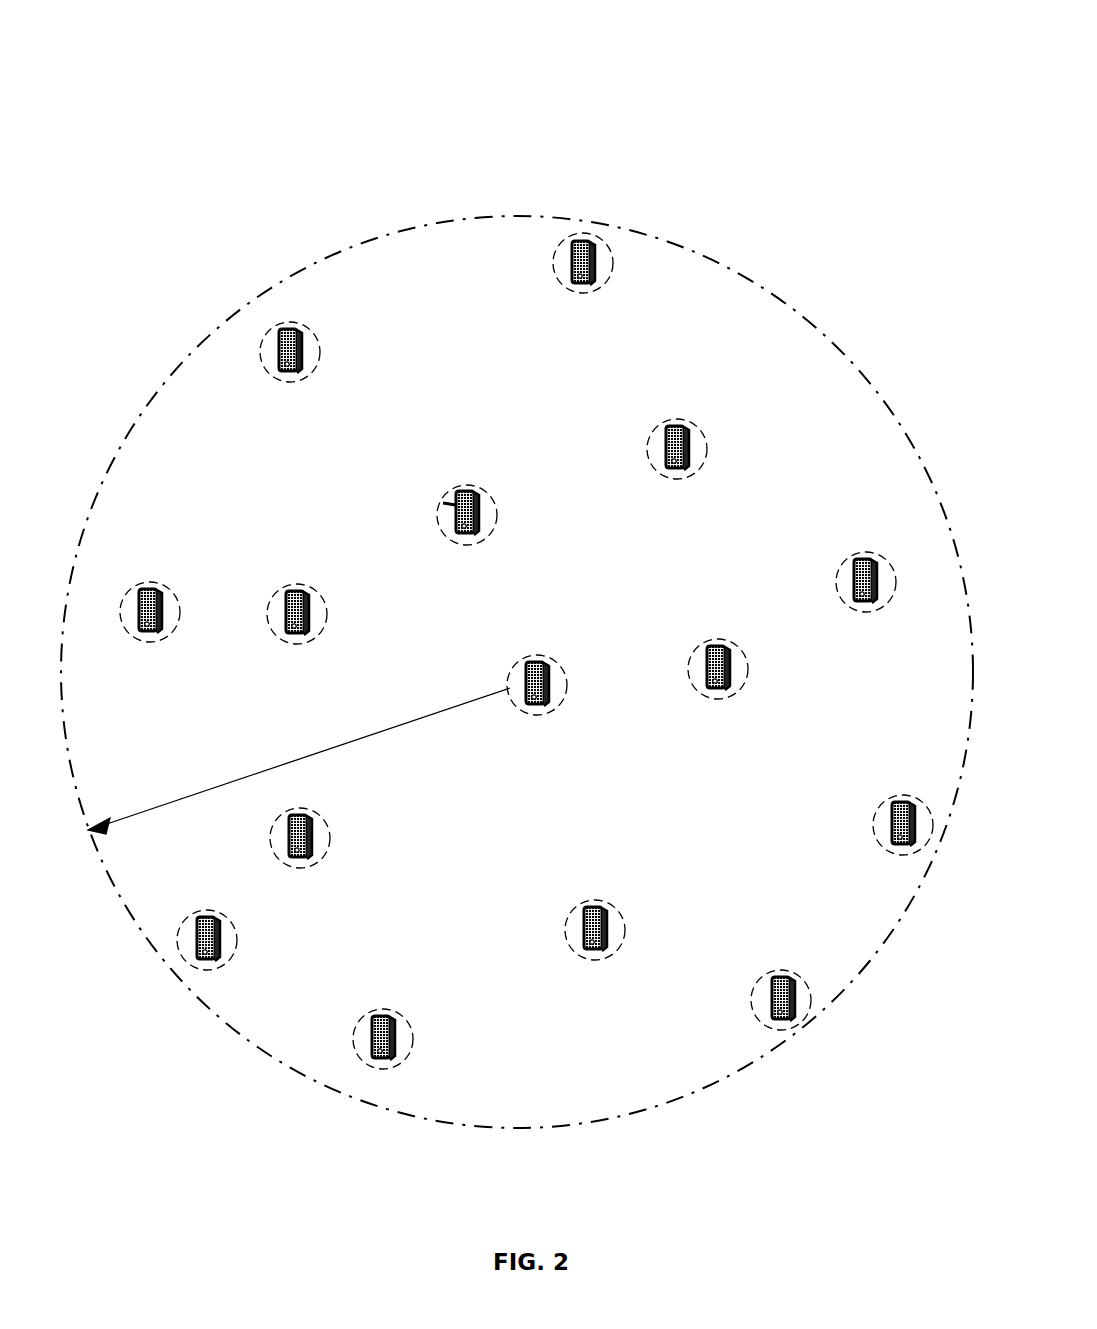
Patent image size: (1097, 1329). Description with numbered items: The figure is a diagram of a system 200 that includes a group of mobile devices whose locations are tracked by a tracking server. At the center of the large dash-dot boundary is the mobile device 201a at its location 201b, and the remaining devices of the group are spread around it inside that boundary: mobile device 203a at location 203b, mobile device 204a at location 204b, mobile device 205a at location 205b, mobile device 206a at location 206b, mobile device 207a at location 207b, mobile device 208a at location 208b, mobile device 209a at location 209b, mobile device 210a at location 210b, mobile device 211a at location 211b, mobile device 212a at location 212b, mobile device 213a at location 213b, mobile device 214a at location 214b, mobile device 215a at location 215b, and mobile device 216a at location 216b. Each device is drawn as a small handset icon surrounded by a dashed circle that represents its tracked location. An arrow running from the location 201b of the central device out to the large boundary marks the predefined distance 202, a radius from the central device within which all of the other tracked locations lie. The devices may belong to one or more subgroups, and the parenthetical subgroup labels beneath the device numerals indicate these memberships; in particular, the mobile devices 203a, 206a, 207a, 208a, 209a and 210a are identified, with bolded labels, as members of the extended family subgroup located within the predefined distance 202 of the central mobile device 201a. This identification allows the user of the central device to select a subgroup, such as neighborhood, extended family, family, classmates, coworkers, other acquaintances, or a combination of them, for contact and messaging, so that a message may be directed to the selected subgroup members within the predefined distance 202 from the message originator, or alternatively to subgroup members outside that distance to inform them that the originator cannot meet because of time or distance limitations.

The system 200 is at (535, 92).
The predefined distance 202 is at (360, 741).
The mobile device 201a is at (560, 690).
The location 201b is at (527, 660).
The mobile device 203a is at (290, 592).
The location 203b is at (325, 618).
The mobile device 204a is at (145, 590).
The location 204b is at (166, 628).
The mobile device 205a is at (300, 342).
The location 205b is at (320, 357).
The mobile device 206a is at (470, 495).
The location 206b is at (490, 530).
The mobile device 207a is at (595, 278).
The location 207b is at (585, 232).
The mobile device 208a is at (690, 468).
The location 208b is at (700, 430).
The mobile device 209a is at (740, 690).
The location 209b is at (738, 656).
The mobile device 210a is at (868, 604).
The location 210b is at (876, 556).
The mobile device 211a is at (912, 846).
The location 211b is at (900, 798).
The mobile device 212a is at (588, 956).
The location 212b is at (598, 902).
The mobile device 213a is at (770, 995).
The location 213b is at (780, 972).
The mobile device 214a is at (380, 1012).
The location 214b is at (410, 1050).
The mobile device 215a is at (292, 840).
The location 215b is at (320, 814).
The mobile device 216a is at (222, 956).
The location 216b is at (216, 908).